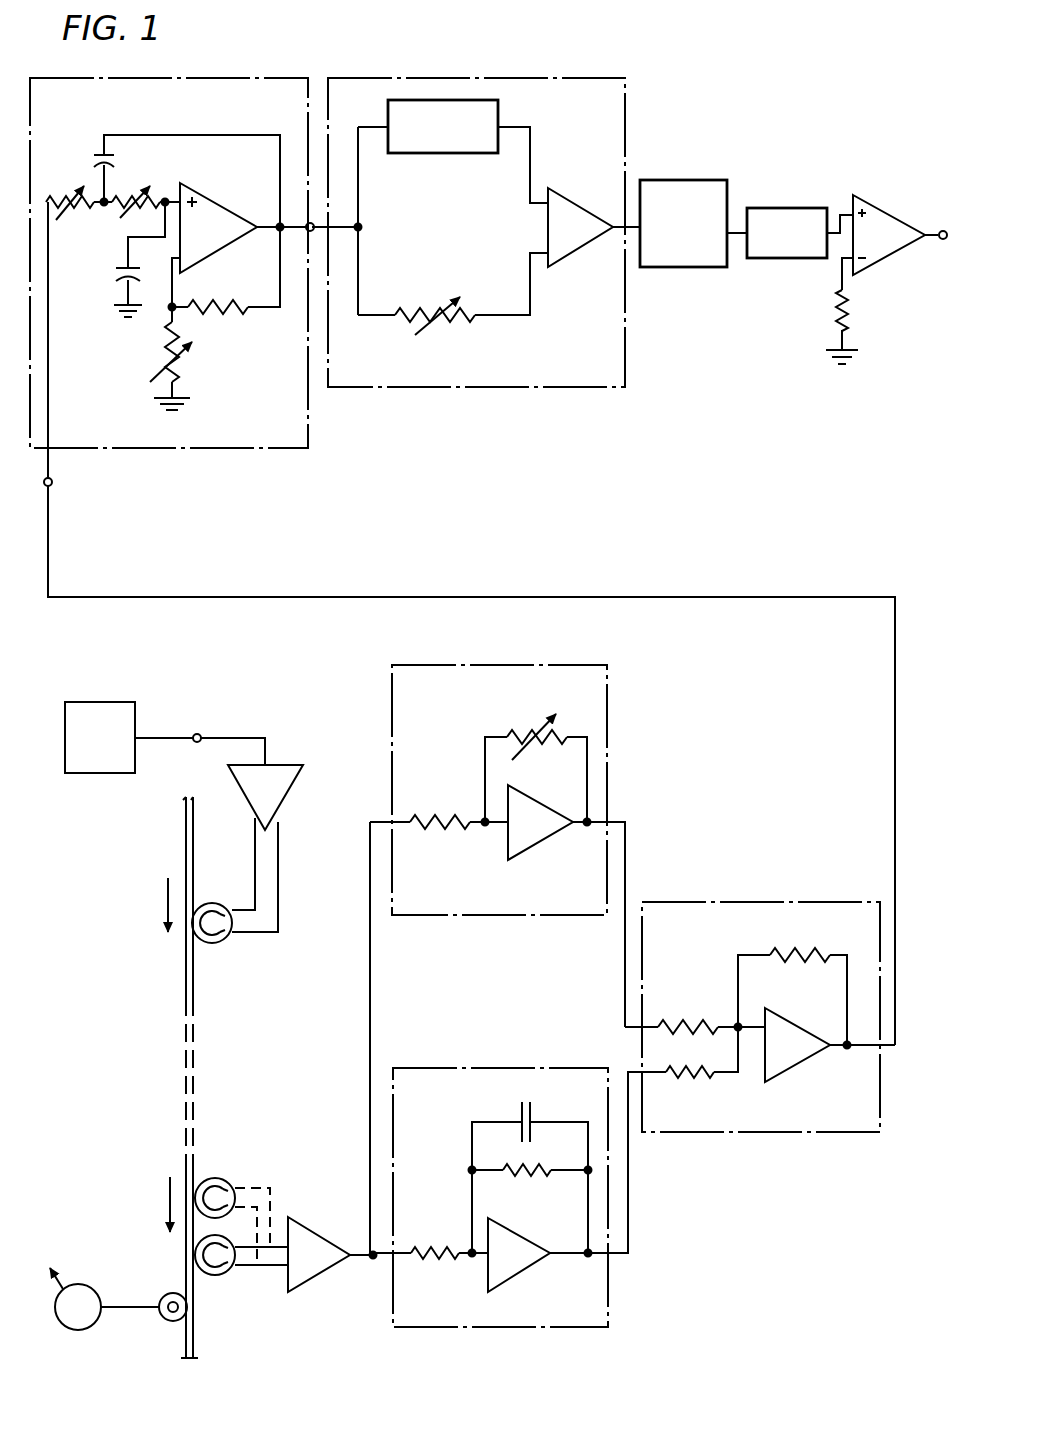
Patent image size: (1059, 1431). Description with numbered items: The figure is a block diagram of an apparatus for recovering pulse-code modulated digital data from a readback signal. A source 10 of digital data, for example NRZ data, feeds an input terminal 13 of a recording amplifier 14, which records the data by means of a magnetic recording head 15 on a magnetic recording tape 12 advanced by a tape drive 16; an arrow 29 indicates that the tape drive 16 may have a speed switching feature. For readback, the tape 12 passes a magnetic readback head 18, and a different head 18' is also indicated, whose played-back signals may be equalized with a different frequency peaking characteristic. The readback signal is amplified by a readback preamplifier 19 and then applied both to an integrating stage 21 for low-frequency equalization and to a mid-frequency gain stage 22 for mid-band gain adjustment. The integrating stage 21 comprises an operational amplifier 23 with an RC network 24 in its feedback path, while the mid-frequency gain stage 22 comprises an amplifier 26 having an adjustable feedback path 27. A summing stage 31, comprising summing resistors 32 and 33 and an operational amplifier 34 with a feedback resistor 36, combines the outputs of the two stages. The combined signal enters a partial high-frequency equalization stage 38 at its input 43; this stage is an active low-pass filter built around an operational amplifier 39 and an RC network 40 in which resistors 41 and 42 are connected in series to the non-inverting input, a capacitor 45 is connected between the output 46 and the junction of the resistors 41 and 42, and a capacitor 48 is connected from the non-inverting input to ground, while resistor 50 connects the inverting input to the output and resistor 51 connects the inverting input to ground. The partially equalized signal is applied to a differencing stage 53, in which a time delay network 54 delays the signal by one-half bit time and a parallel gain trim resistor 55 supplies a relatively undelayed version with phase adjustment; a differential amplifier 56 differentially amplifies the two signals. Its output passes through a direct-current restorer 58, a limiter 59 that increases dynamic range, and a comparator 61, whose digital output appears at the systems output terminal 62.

The source of digital data 10 is at (101, 753).
The magnetic recording tape 12 is at (184, 990).
The input terminal 13 is at (204, 732).
The recording amplifier 14 is at (272, 797).
The magnetic recording head 15 is at (224, 940).
The tape drive 16 is at (129, 1304).
The magnetic readback head 18 is at (241, 1280).
The different head 18' is at (242, 1200).
The readback preamplifier 19 is at (319, 1267).
The integrating stage 21 is at (556, 1313).
The mid-frequency gain stage 22 is at (564, 895).
The operational amplifier 23 is at (521, 1267).
The RC network 24 is at (486, 1130).
The amplifier 26 is at (543, 837).
The adjustable feedback path 27 is at (522, 730).
The arrow 29 is at (96, 1326).
The summing stage 31 is at (686, 955).
The summing resistor 32 is at (690, 1080).
The summing resistor 33 is at (698, 1022).
The operational amplifier 34 is at (798, 1060).
The feedback resistor 36 is at (782, 955).
The partial high-frequency equalization stage 38 is at (258, 407).
The operational amplifier 39 is at (214, 200).
The RC network 40 is at (76, 152).
The resistor 41 is at (82, 224).
The resistor 42 is at (136, 178).
The input 43 is at (53, 484).
The capacitor 45 is at (116, 160).
The output 46 is at (318, 223).
The capacitor 48 is at (110, 280).
The resistor 50 is at (244, 300).
The resistor 51 is at (156, 352).
The differencing stage 53 is at (561, 361).
The time delay network 54 is at (432, 156).
The gain trim resistor 55 is at (420, 297).
The differential amplifier 56 is at (581, 245).
The direct-current restorer 58 is at (666, 178).
The limiter 59 is at (796, 206).
The comparator 61 is at (885, 253).
The systems output terminal 62 is at (930, 242).